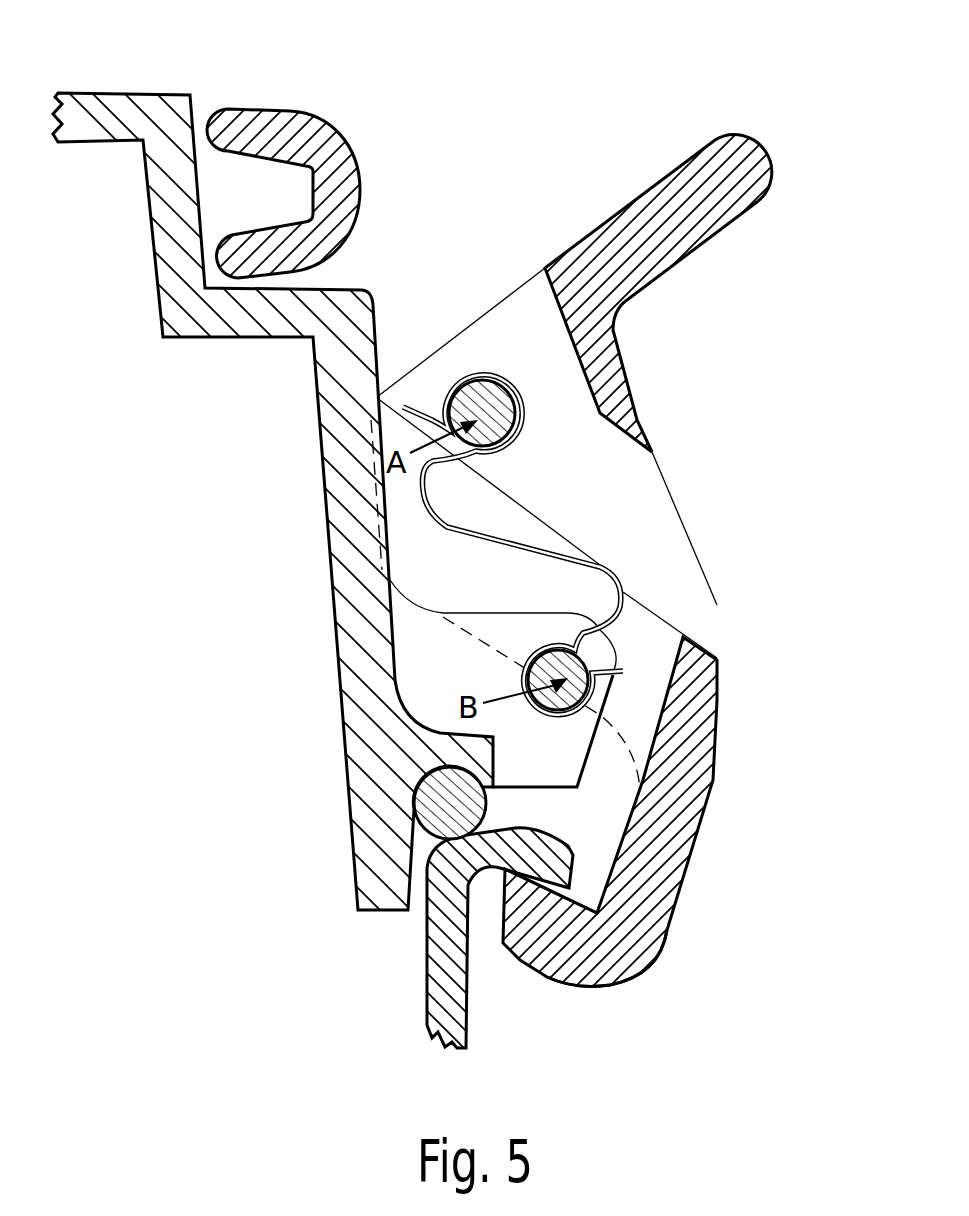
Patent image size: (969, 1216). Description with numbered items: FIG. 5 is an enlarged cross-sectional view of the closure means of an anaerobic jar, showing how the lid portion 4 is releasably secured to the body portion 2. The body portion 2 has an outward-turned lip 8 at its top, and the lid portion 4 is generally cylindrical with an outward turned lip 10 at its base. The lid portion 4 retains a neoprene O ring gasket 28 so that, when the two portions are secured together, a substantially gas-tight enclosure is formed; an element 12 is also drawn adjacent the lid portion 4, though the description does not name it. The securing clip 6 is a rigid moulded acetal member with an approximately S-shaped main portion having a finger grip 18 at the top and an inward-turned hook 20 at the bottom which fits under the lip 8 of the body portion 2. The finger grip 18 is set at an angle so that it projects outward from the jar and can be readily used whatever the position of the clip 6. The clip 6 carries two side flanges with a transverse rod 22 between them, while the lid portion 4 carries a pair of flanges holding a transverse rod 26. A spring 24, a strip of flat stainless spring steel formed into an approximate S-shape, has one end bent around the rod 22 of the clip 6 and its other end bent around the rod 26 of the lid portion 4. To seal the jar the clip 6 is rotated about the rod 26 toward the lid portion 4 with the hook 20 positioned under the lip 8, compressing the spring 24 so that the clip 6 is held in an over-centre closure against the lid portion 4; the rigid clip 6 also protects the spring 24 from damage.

The body portion 2 is at (443, 1000).
The lid portion 4 is at (153, 107).
The clip 6 is at (658, 513).
The outward-turned lip 8 is at (577, 872).
The outward turned lip 10 is at (485, 757).
The clip 12 is at (350, 130).
The finger grip 18 is at (730, 200).
The hook 20 is at (553, 962).
The transverse rod 22 is at (507, 375).
The spring 24 is at (620, 622).
The transverse rod 26 is at (615, 672).
The O ring gasket 28 is at (437, 817).